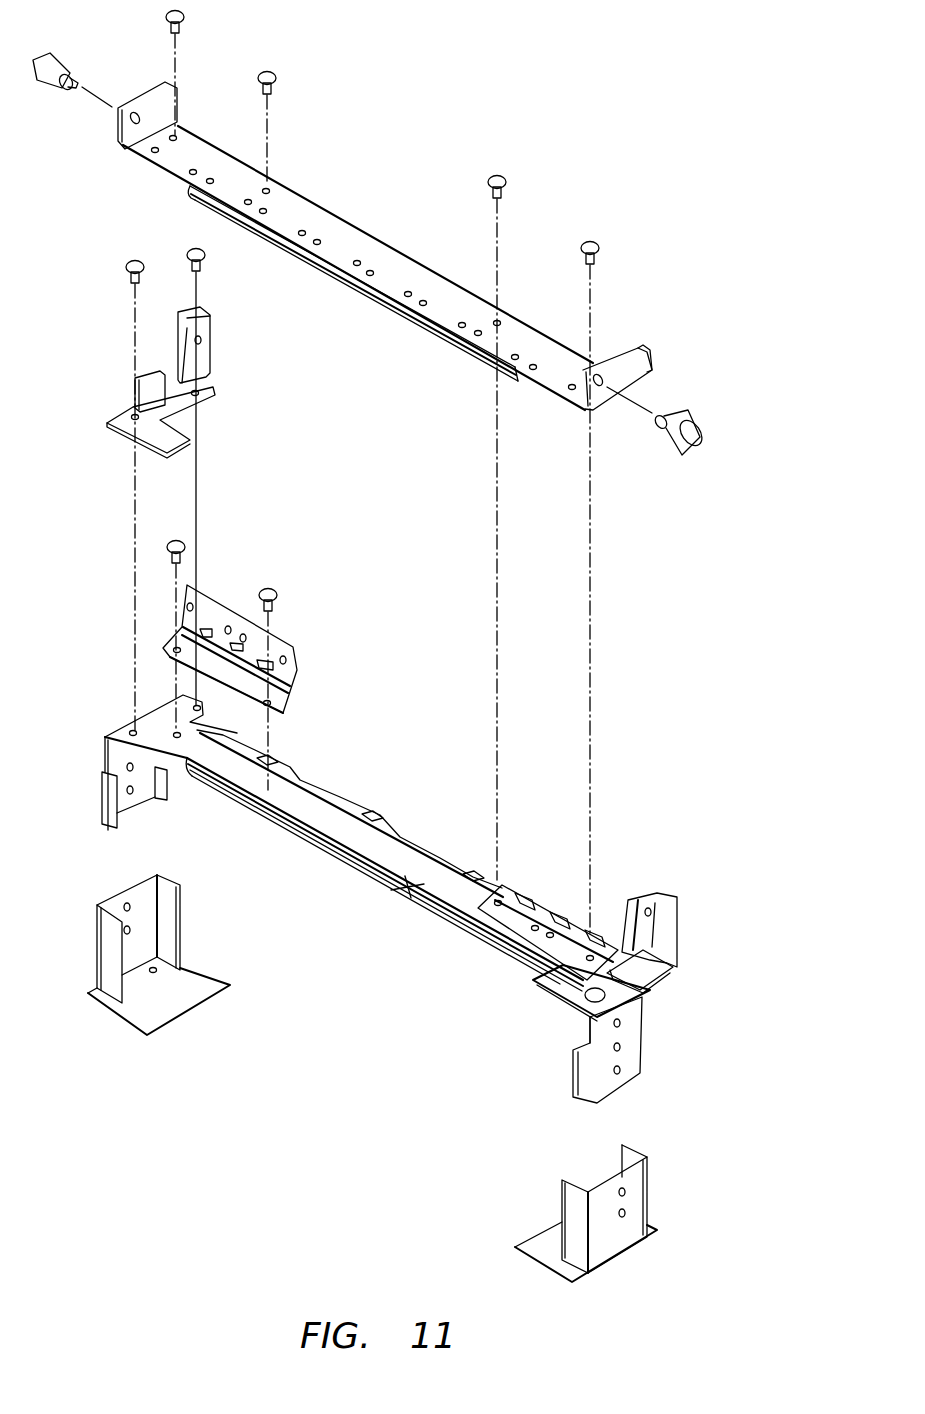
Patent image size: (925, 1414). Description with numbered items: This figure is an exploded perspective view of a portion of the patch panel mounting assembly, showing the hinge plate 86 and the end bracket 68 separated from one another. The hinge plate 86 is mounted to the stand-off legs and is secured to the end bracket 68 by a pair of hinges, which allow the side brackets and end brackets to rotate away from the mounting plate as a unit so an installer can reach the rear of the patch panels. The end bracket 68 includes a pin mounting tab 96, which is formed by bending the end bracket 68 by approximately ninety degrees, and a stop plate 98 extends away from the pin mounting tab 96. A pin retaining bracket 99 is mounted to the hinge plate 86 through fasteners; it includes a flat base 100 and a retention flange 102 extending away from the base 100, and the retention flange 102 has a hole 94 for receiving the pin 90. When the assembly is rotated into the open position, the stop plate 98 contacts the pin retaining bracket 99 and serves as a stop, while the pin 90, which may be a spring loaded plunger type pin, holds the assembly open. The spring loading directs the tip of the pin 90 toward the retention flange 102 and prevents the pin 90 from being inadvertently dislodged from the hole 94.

The end bracket 68 is at (330, 232).
The pin mounting tab 96 is at (617, 350).
The stop plate 98 is at (650, 365).
The pin 90 is at (700, 441).
The flat base 100 is at (160, 443).
The retention flange 102 is at (185, 357).
The pin retaining bracket 99 is at (210, 349).
The hinge plate 86 is at (422, 882).
The hole 94 is at (647, 903).